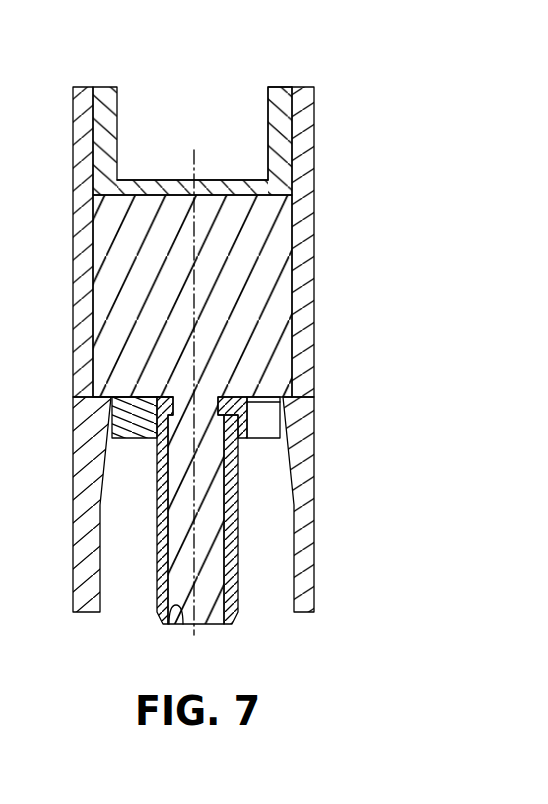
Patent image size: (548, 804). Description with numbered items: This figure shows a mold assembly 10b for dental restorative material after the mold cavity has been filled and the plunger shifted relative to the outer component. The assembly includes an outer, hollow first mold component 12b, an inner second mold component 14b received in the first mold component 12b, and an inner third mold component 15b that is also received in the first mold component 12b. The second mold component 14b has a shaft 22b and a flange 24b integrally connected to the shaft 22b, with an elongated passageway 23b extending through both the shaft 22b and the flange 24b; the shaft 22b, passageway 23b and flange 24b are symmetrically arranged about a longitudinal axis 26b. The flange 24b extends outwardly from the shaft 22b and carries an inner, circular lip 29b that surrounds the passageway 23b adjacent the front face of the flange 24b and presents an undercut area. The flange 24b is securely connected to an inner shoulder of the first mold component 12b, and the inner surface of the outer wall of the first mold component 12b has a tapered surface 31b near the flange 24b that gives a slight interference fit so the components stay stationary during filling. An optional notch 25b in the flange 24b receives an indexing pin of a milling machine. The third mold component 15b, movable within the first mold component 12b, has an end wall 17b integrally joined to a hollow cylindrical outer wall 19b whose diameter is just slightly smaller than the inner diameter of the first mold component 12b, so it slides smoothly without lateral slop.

The mold assembly 10b is at (310, 55).
The first mold component 12b is at (324, 240).
The second mold component 14b is at (150, 581).
The third mold component 15b is at (120, 82).
The end wall 17b is at (124, 180).
The outer wall 19b is at (270, 122).
The shaft 22b is at (240, 612).
The passageway 23b is at (177, 622).
The flange 24b is at (112, 397).
The notch 25b is at (247, 430).
The longitudinal axis 26b is at (194, 170).
The lip 29b is at (183, 405).
The tapered surface 31b is at (282, 419).